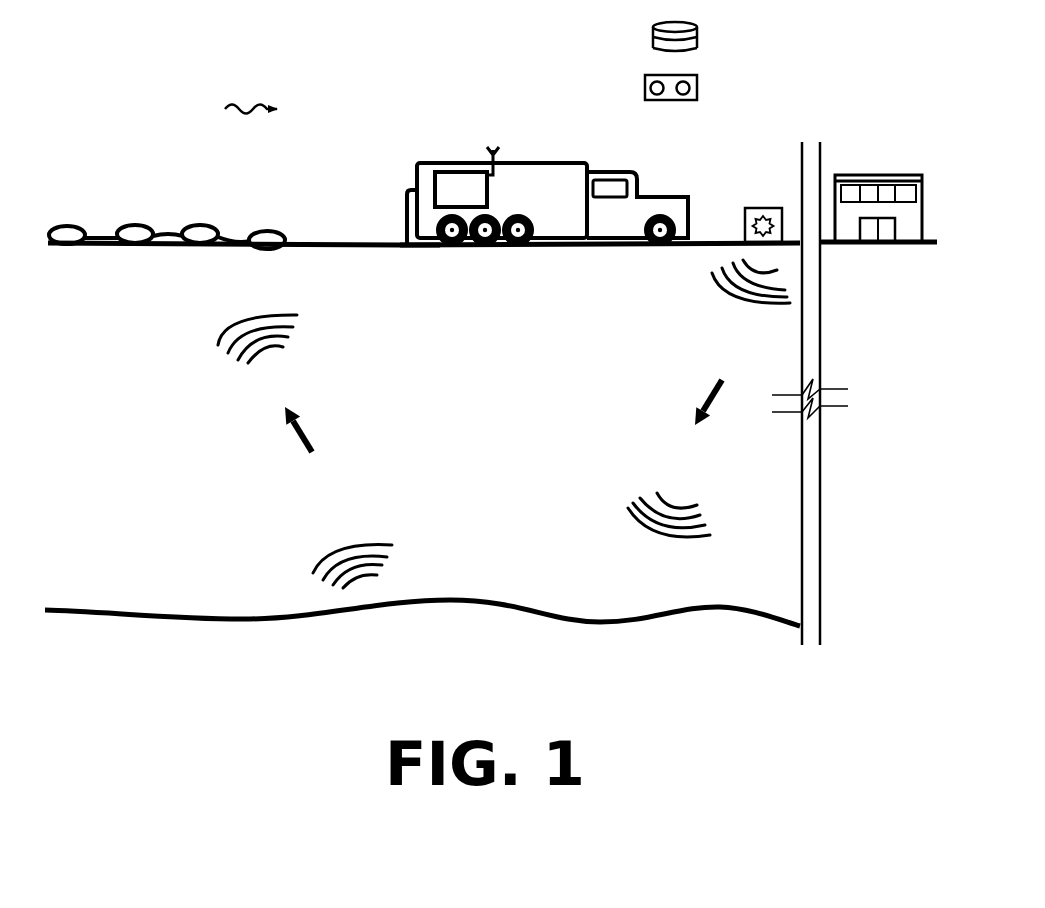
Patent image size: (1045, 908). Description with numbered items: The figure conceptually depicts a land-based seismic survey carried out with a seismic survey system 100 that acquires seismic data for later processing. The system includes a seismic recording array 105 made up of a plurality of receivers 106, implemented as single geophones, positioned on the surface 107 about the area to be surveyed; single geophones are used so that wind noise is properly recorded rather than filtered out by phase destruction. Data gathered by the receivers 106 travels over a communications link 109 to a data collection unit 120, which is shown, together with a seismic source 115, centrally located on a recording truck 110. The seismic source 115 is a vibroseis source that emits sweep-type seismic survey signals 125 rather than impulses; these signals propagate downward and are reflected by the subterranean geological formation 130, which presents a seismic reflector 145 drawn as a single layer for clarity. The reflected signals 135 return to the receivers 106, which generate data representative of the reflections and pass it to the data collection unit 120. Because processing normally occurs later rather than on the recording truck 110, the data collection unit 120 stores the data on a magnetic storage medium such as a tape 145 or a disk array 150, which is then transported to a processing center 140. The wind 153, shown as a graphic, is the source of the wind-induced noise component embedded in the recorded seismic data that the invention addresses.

The seismic survey system 100 is at (213, 22).
The seismic recording array 105 is at (141, 150).
The receivers 106 is at (268, 231).
The surface 107 is at (425, 252).
The communications link 109 is at (408, 190).
The recording truck 110 is at (574, 147).
The seismic source 115 is at (748, 208).
The data collection unit 120 is at (445, 172).
The seismic survey signals 125 is at (708, 309).
The subterranean geological formation 130 is at (496, 407).
The reflected signals 135 is at (292, 368).
The processing center 140 is at (886, 244).
The tape 145 is at (717, 607).
The disk array 150 is at (653, 37).
The wind 153 is at (227, 111).